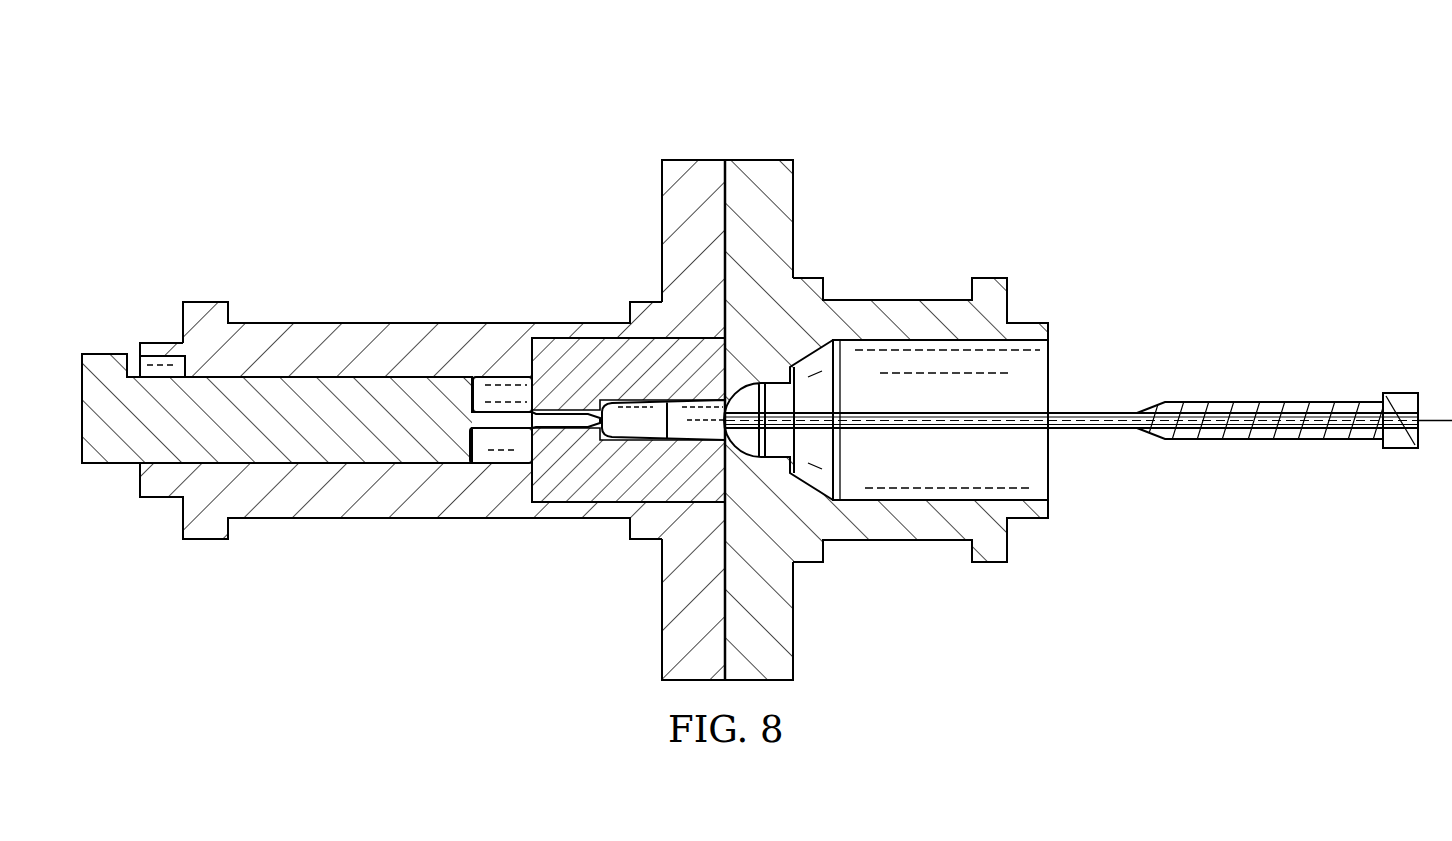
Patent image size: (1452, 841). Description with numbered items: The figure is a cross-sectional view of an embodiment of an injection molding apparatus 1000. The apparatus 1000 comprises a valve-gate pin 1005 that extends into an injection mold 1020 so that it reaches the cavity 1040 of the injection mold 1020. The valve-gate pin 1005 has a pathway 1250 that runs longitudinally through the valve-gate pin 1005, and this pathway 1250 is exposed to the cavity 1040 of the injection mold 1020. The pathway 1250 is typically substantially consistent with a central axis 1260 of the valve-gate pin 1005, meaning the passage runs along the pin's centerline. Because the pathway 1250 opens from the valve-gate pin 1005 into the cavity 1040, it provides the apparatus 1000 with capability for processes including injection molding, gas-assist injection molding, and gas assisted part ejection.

The injection molding apparatus 1000 is at (1009, 114).
The injection mold 1020 is at (725, 100).
The cavity 1040 is at (634, 401).
The valve-gate pin 1005 is at (1176, 405).
The pathway 1250 is at (1297, 430).
The central axis 1260 is at (1440, 413).